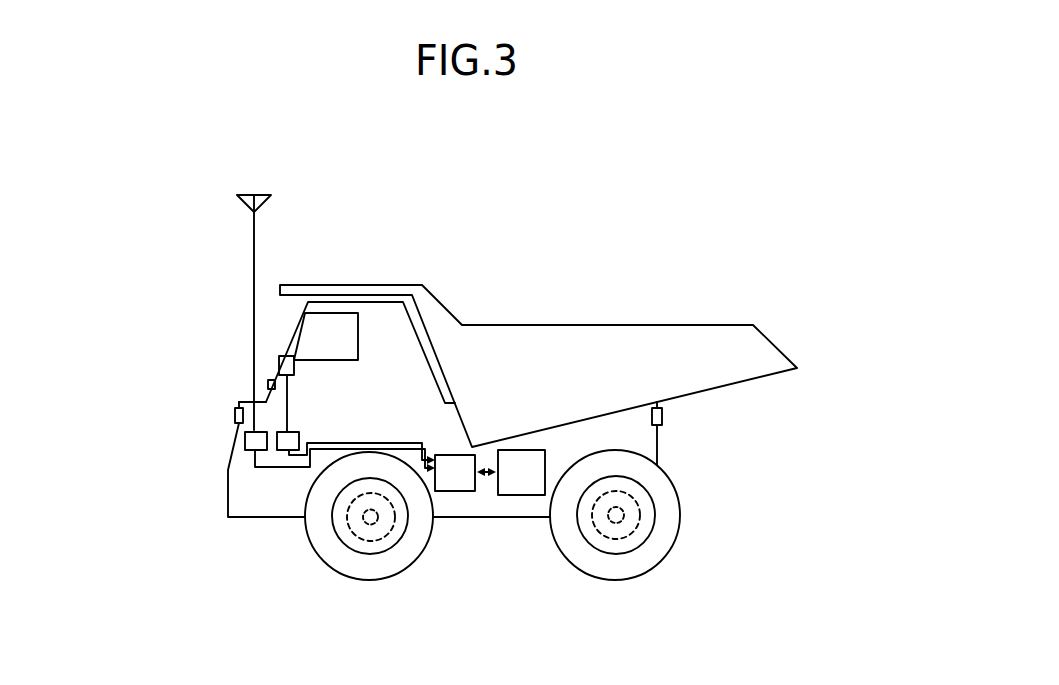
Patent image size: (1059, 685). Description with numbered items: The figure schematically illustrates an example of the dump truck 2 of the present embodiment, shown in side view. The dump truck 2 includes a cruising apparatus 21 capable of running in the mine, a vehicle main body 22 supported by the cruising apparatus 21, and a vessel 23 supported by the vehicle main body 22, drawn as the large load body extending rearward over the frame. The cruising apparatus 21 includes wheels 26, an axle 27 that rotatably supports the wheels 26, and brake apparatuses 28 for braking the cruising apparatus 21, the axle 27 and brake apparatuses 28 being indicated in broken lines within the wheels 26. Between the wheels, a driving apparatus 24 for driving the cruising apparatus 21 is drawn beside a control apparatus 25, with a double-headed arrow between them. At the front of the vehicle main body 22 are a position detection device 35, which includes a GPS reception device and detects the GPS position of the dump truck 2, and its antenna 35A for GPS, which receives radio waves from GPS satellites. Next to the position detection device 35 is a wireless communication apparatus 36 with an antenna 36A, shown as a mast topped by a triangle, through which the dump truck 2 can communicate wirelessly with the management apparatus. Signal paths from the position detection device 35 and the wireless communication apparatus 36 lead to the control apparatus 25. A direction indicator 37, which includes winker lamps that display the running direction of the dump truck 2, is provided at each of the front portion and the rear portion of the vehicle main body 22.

The dump truck 2 is at (648, 163).
The cruising apparatus 21 is at (682, 492).
The vehicle main body 22 is at (662, 442).
The vessel 23 is at (518, 325).
The driving apparatus 24 is at (520, 496).
The control apparatus 25 is at (452, 492).
The wheels 26 is at (377, 581).
The axle 27 is at (390, 528).
The brake apparatuses 28 is at (352, 537).
The position detection device 35 is at (299, 440).
The antenna 35A is at (279, 358).
The wireless communication apparatus 36 is at (245, 441).
The antenna 36A is at (258, 195).
The direction indicator 37 is at (235, 414).